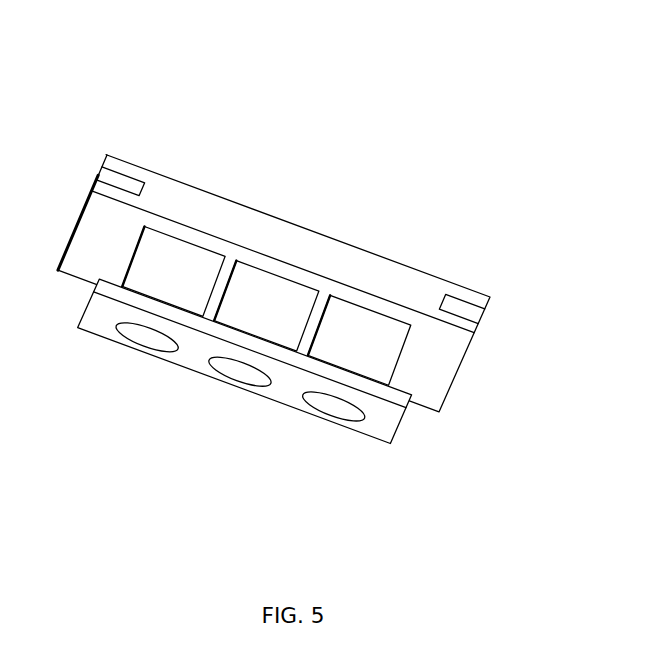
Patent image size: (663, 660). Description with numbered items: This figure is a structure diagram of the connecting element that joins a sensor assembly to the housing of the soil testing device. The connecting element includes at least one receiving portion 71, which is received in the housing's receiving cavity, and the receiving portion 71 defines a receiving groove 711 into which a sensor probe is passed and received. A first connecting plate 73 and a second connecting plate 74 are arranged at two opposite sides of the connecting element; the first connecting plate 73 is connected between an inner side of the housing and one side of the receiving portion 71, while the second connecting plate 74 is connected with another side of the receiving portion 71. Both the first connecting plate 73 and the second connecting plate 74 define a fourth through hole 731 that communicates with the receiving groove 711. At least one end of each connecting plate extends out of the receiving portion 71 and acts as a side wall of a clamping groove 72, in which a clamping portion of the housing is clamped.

The receiving portion 71 is at (370, 352).
The clamping groove 72 is at (462, 308).
The first connecting plate 73 is at (97, 315).
The second connecting plate 74 is at (145, 169).
The fourth through hole 731 is at (236, 383).
The receiving groove 711 is at (337, 410).